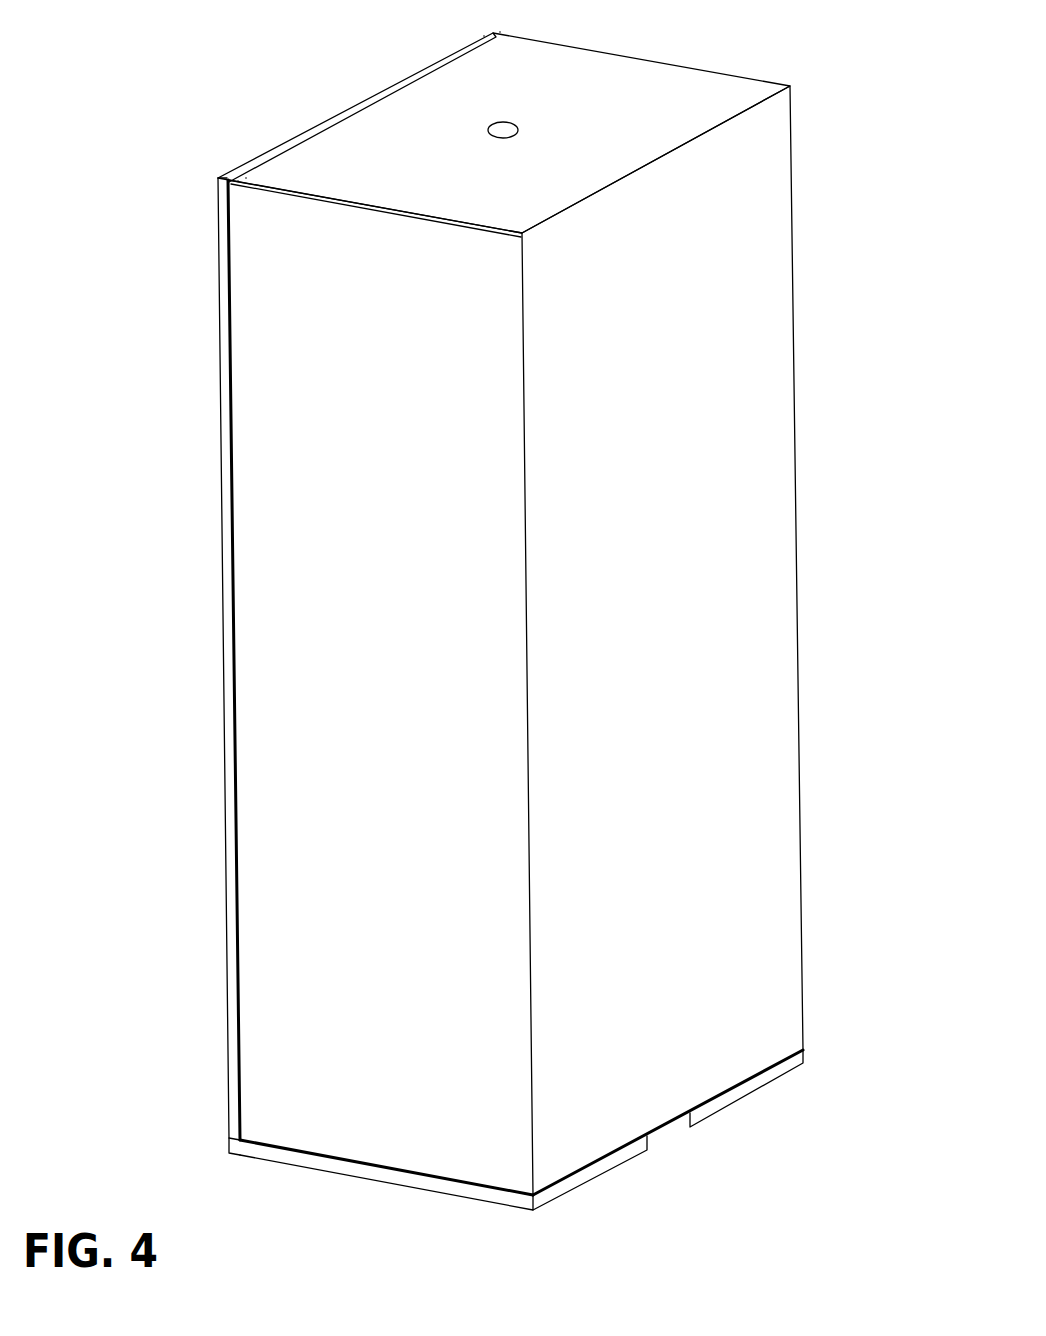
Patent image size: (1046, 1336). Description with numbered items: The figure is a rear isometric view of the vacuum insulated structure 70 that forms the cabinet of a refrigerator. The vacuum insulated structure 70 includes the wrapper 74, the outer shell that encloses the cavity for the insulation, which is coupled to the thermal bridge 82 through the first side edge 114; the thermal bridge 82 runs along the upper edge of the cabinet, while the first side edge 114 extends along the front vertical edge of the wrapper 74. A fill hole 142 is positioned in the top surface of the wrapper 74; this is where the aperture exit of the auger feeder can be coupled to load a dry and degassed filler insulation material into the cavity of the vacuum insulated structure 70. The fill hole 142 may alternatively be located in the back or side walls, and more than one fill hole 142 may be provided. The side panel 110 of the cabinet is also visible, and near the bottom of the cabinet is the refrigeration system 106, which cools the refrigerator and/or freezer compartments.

The vacuum insulated structure 70 is at (170, 328).
The wrapper 74 is at (680, 95).
The thermal bridge 82 is at (295, 137).
The fill hole 142 is at (495, 122).
The side panel 110 is at (763, 120).
The first side edge 114 is at (232, 555).
The refrigeration system 106 is at (818, 985).